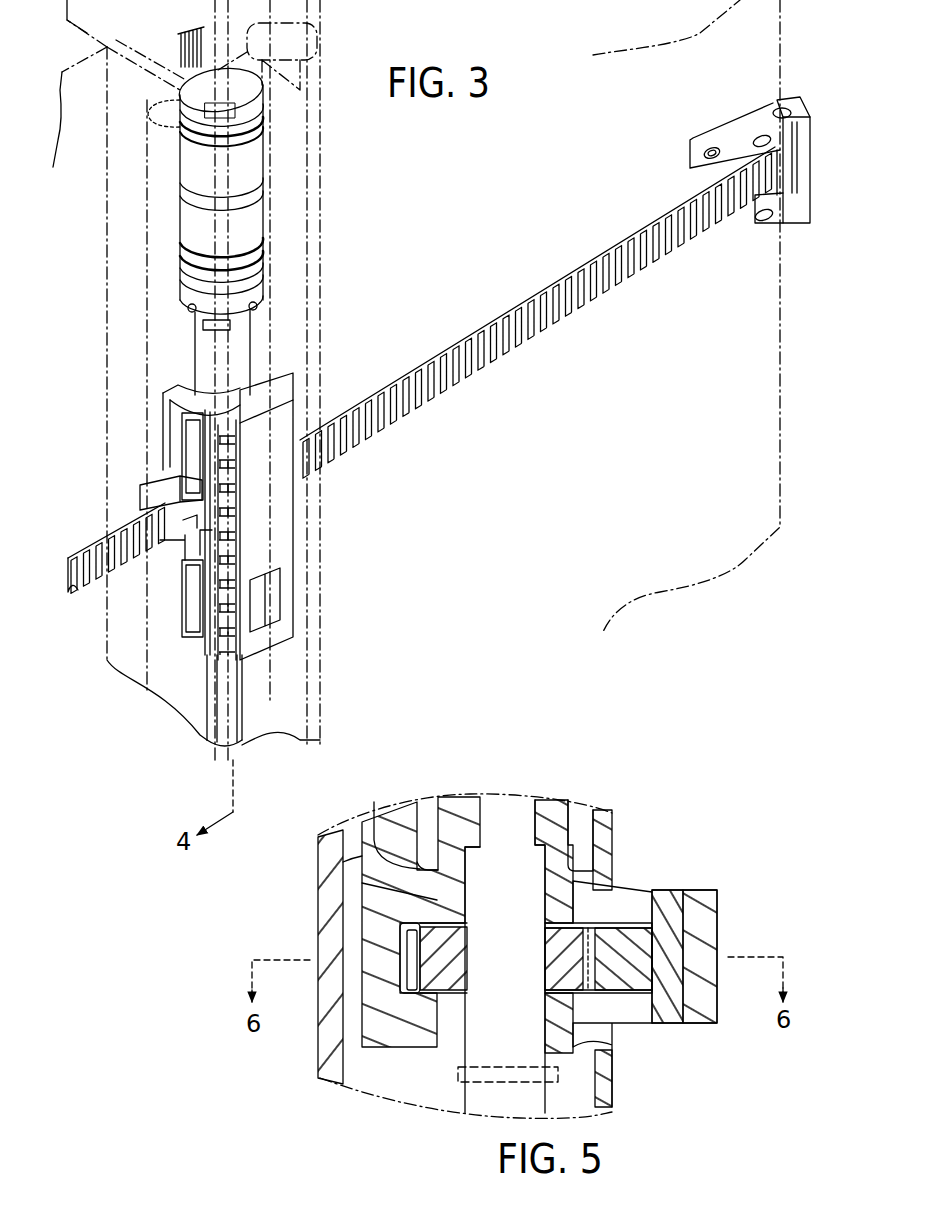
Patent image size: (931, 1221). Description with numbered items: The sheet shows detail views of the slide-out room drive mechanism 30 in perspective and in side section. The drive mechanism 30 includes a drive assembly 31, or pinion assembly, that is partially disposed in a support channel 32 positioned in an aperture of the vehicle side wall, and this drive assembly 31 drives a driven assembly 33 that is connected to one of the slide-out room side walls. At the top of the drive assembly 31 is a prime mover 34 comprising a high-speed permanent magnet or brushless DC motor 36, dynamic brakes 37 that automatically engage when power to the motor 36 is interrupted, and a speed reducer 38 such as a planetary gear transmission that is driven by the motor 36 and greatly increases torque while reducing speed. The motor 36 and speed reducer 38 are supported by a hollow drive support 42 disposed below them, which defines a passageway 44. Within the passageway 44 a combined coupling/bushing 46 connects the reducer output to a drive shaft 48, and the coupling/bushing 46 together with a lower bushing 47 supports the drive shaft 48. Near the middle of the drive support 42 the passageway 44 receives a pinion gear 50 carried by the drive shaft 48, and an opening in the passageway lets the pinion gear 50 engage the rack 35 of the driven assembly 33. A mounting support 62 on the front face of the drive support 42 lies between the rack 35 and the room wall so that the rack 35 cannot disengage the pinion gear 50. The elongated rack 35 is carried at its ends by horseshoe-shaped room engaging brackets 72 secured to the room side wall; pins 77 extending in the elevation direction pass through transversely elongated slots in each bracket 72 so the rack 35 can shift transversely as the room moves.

In FIG. 3, the slide-out room drive mechanism 30 is at (412, 212).
In FIG. 3, the drive assembly 31 is at (140, 386).
In FIG. 3, the support channel 32 is at (320, 62).
In FIG. 5, the support channel 32 is at (318, 922).
In FIG. 3, the driven assembly 33 is at (606, 300).
In FIG. 3, the prime mover 34 is at (265, 242).
In FIG. 3, the rack 35 is at (532, 296).
In FIG. 5, the rack 35 is at (622, 920).
In FIG. 3, the motor 36 is at (266, 150).
In FIG. 3, the dynamic brakes 37 is at (270, 112).
In FIG. 3, the speed reducer 38 is at (268, 265).
In FIG. 3, the drive support 42 is at (297, 515).
In FIG. 5, the drive support 42 is at (362, 857).
In FIG. 5, the passageway 44 is at (430, 840).
In FIG. 5, the combined coupling/bushing 46 is at (381, 797).
In FIG. 5, the lower bushing 47 is at (614, 1043).
In FIG. 3, the drive shaft 48 is at (216, 728).
In FIG. 5, the drive shaft 48 is at (463, 1097).
In FIG. 3, the pinion gear 50 is at (214, 545).
In FIG. 5, the pinion gear 50 is at (420, 993).
In FIG. 5, the mounting support 62 is at (672, 890).
In FIG. 3, the room engaging bracket 72 is at (746, 118).
In FIG. 3, the pin 77 is at (794, 108).